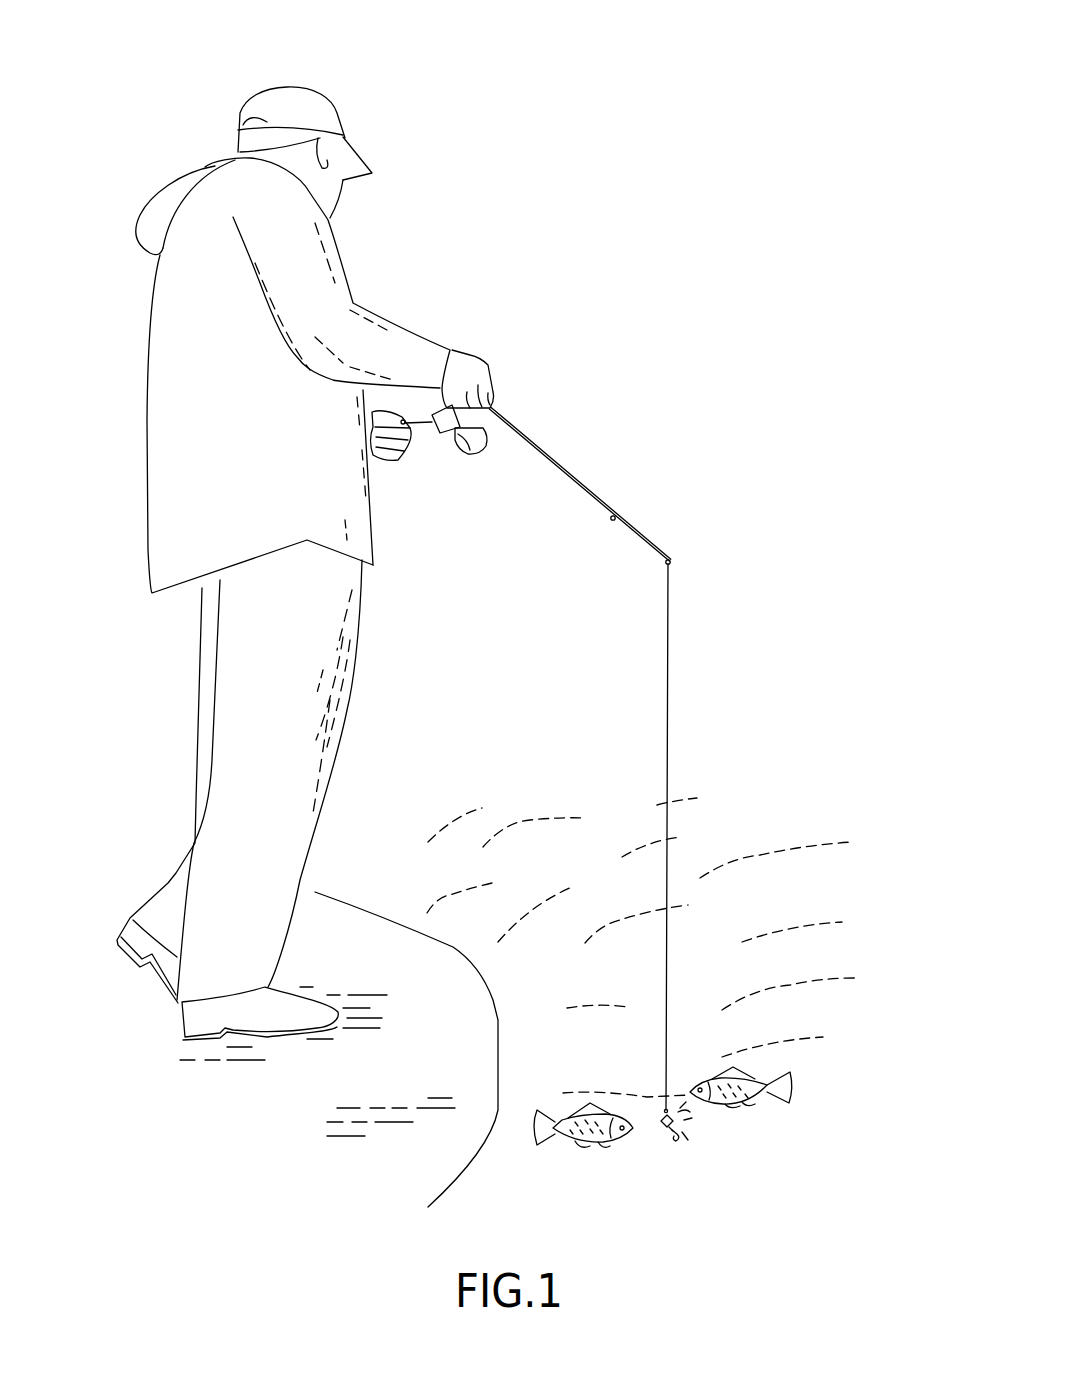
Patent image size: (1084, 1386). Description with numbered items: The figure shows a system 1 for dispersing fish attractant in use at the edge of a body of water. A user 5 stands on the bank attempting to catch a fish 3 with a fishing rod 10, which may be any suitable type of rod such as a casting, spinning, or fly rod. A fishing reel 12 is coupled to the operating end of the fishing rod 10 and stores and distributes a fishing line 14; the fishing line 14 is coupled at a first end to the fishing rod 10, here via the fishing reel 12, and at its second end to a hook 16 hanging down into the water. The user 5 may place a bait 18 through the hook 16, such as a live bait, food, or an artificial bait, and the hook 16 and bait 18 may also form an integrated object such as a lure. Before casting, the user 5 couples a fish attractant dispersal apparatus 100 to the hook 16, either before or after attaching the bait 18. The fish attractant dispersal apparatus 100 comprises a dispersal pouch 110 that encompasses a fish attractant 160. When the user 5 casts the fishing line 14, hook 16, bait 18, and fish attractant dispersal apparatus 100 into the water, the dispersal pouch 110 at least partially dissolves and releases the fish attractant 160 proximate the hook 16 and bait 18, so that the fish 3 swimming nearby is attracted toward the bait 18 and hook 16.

The system 1 is at (835, 92).
The fish 3 is at (558, 1147).
The user 5 is at (433, 242).
The fishing rod 10 is at (642, 513).
The fishing reel 12 is at (483, 467).
The fishing line 14 is at (597, 513).
The hook 16 is at (680, 1142).
The bait 18 is at (693, 1143).
The fish attractant dispersal apparatus 100 is at (640, 1105).
The dispersal pouch 110 is at (660, 1127).
The fish attractant 160 is at (700, 1120).